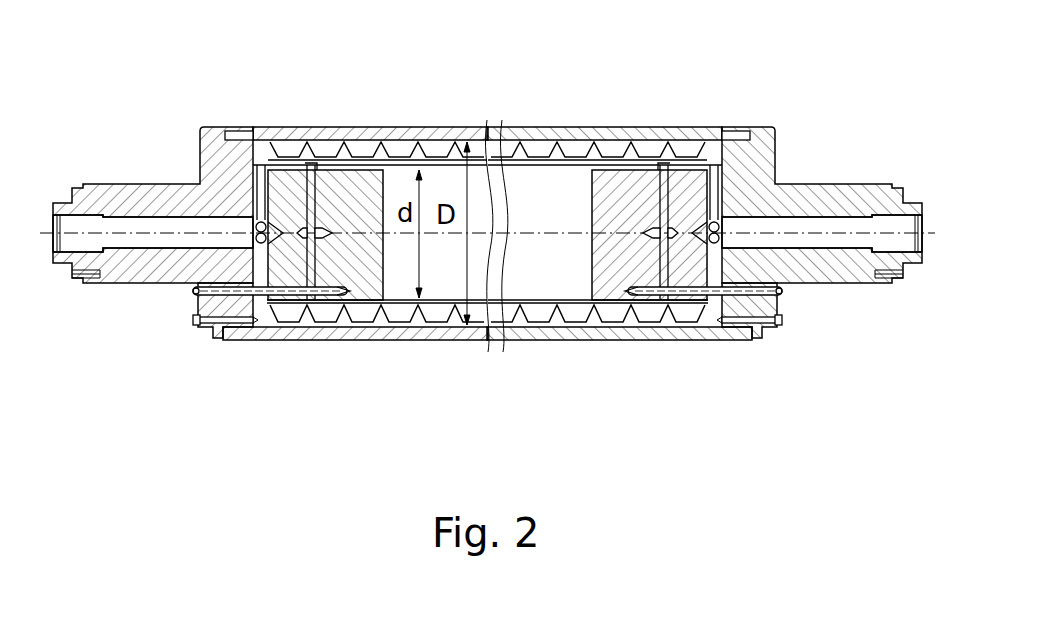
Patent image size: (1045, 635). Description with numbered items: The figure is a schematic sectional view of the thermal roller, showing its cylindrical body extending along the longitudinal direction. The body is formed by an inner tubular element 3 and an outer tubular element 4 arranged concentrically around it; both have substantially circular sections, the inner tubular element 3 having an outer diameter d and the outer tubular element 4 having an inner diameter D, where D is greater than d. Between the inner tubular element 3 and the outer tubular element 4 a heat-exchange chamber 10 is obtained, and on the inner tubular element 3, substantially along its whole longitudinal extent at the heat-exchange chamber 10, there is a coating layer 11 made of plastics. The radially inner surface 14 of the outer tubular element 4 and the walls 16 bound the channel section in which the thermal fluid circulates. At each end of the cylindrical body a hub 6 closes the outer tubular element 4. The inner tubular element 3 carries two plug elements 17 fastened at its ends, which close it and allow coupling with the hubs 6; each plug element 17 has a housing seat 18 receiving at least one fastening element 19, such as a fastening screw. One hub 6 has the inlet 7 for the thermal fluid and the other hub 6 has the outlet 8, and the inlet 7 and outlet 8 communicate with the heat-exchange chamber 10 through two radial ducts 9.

The inner tubular element 3 is at (572, 140).
The outer tubular element 4 is at (728, 140).
The hub 6 is at (840, 184).
The inlet 7 is at (133, 227).
The outlet 8 is at (831, 240).
The radial duct 9 is at (273, 187).
The heat-exchange chamber 10 is at (678, 320).
The coating layer 11 is at (567, 150).
The radially inner surface 14 is at (405, 150).
The wall 16 is at (690, 165).
The plug element 17 is at (335, 165).
The housing seat 18 is at (337, 272).
The fastening element 19 is at (212, 327).